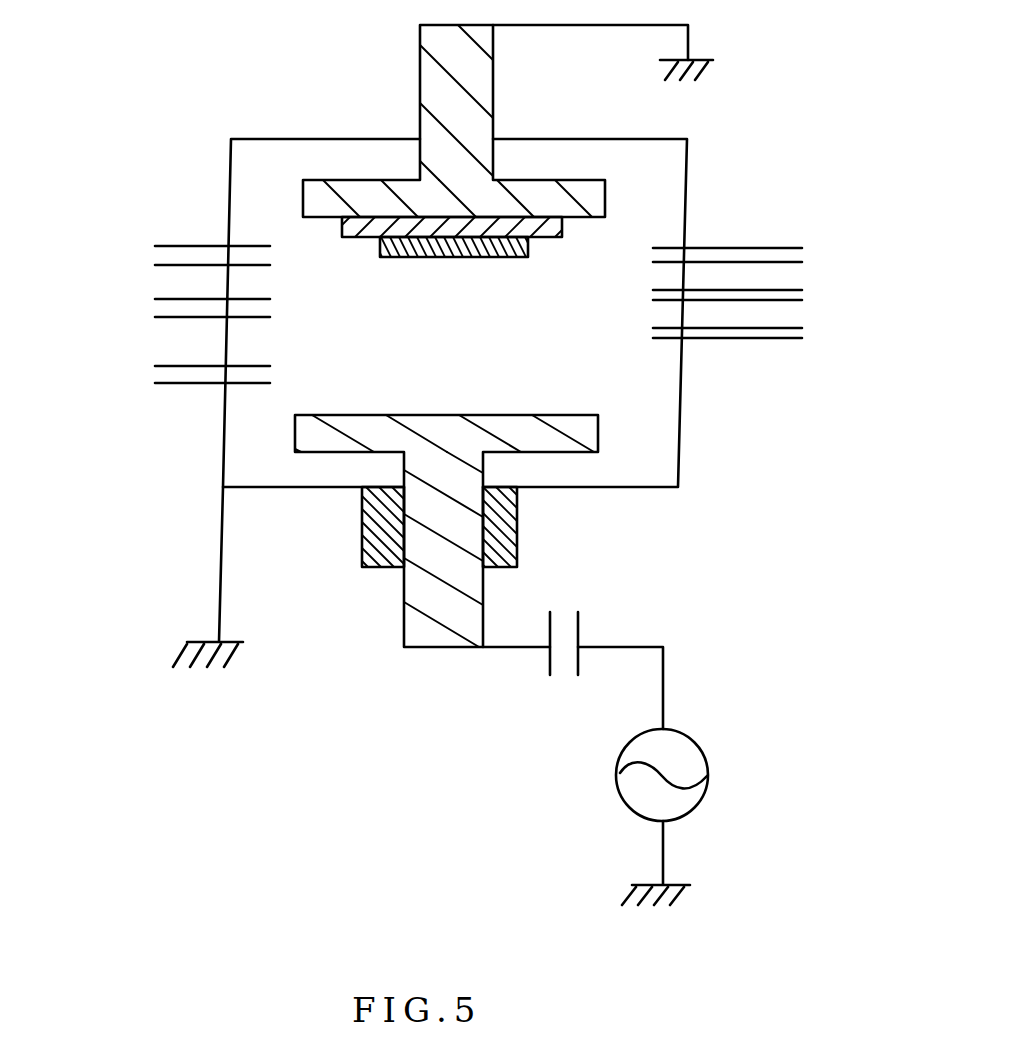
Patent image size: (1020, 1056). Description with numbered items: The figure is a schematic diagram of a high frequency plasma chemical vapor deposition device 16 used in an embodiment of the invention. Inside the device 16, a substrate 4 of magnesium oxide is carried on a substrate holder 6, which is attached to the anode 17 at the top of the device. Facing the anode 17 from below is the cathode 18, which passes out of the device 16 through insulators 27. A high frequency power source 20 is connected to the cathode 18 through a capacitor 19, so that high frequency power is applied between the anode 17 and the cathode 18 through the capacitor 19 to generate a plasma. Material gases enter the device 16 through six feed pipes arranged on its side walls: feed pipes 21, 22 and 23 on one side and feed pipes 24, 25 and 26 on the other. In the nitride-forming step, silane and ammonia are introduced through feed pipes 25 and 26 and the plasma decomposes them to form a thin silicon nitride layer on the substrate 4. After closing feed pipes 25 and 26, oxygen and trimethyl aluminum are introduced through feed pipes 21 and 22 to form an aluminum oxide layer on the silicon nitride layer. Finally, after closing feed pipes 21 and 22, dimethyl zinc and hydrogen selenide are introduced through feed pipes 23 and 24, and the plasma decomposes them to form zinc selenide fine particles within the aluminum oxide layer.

The substrate 4 is at (380, 248).
The substrate holder 6 is at (357, 229).
The plasma CVD device 16 is at (690, 207).
The anode 17 is at (605, 193).
The cathode 18 is at (598, 440).
The capacitor 19 is at (565, 605).
The high frequency power source 20 is at (708, 768).
The feed pipe 21 is at (808, 252).
The feed pipe 22 is at (808, 298).
The feed pipe 23 is at (808, 336).
The feed pipe 24 is at (150, 256).
The feed pipe 25 is at (150, 307).
The feed pipe 26 is at (148, 376).
The insulators 27 is at (362, 567).